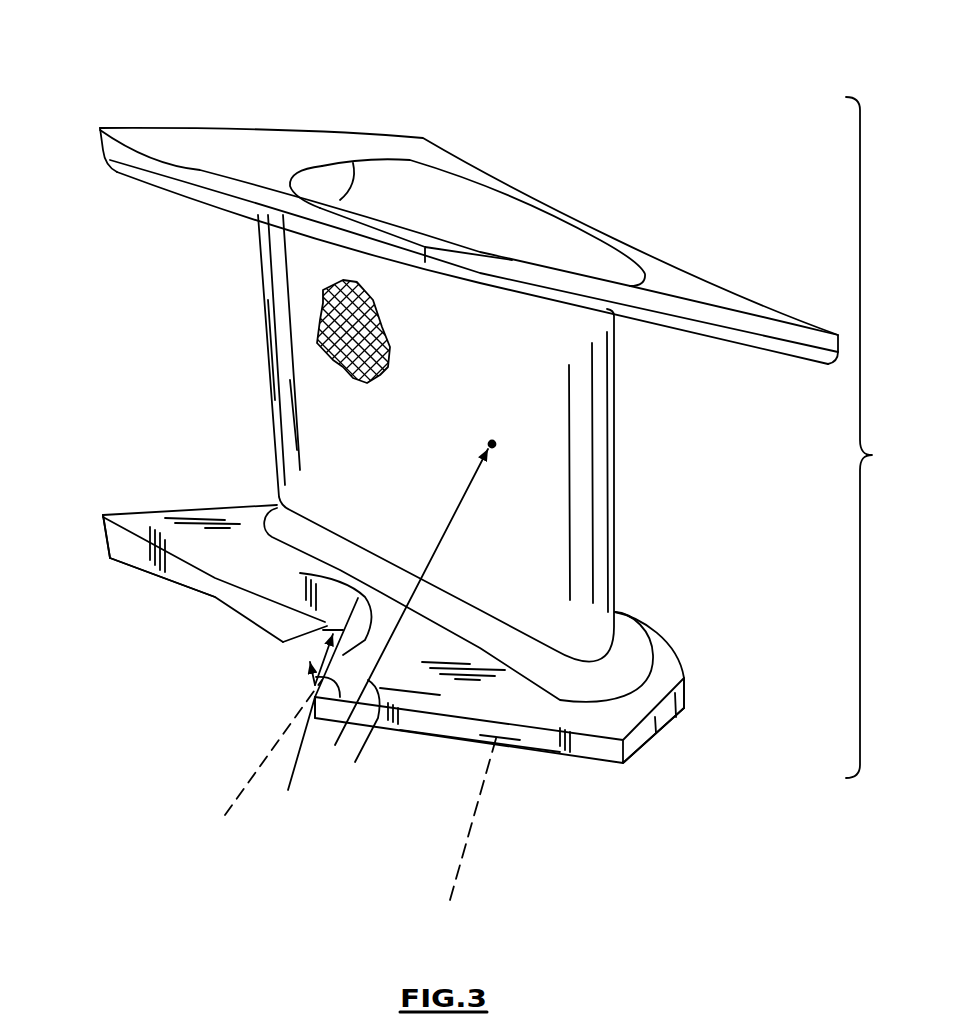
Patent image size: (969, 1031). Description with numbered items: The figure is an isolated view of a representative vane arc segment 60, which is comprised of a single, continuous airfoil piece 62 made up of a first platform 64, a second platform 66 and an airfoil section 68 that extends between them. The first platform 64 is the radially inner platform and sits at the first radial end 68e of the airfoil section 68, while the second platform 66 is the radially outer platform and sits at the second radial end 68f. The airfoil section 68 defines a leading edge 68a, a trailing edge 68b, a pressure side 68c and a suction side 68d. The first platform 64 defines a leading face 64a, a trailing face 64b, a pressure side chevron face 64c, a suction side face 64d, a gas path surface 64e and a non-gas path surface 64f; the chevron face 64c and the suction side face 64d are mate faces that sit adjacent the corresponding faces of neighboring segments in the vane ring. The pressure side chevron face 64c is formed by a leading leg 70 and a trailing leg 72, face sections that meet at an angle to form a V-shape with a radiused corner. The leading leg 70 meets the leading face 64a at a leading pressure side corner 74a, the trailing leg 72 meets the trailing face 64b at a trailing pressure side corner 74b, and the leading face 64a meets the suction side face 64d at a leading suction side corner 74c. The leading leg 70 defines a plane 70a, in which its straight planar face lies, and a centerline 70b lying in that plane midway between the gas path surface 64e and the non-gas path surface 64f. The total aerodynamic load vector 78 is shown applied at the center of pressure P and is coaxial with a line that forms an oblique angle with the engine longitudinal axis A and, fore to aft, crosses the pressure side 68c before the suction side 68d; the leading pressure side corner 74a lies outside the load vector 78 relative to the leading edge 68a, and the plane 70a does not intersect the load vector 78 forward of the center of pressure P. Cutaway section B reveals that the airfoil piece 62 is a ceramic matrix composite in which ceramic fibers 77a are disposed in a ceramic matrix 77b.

The vane arc segment 60 is at (712, 99).
The airfoil piece 62 is at (872, 455).
The first platform 64 is at (665, 669).
The leading face 64a is at (546, 751).
The trailing face 64b is at (144, 507).
The pressure side chevron face 64c is at (182, 551).
The suction side face 64d is at (685, 707).
The gas path surface 64e is at (403, 686).
The non-gas path surface 64f is at (500, 737).
The second platform 66 is at (99, 143).
The airfoil section 68 is at (618, 425).
The leading edge 68a is at (600, 523).
The trailing edge 68b is at (293, 354).
The pressure side 68c is at (304, 438).
The suction side 68d is at (600, 367).
The first radial end 68e is at (307, 530).
The second radial end 68f is at (620, 320).
The leading leg 70 is at (323, 632).
The plane 70a is at (291, 778).
The centerline 70b is at (252, 778).
The trailing leg 72 is at (178, 613).
The leading pressure side corner 74a is at (310, 708).
The trailing pressure side corner 74b is at (110, 543).
The leading suction side corner 74c is at (628, 763).
The ceramic fibers 77a is at (324, 328).
The ceramic matrix 77b is at (347, 366).
The total aerodynamic load vector 78 is at (338, 744).
The engine longitudinal axis A is at (462, 836).
The cutaway section B is at (326, 292).
The center of pressure P is at (491, 443).